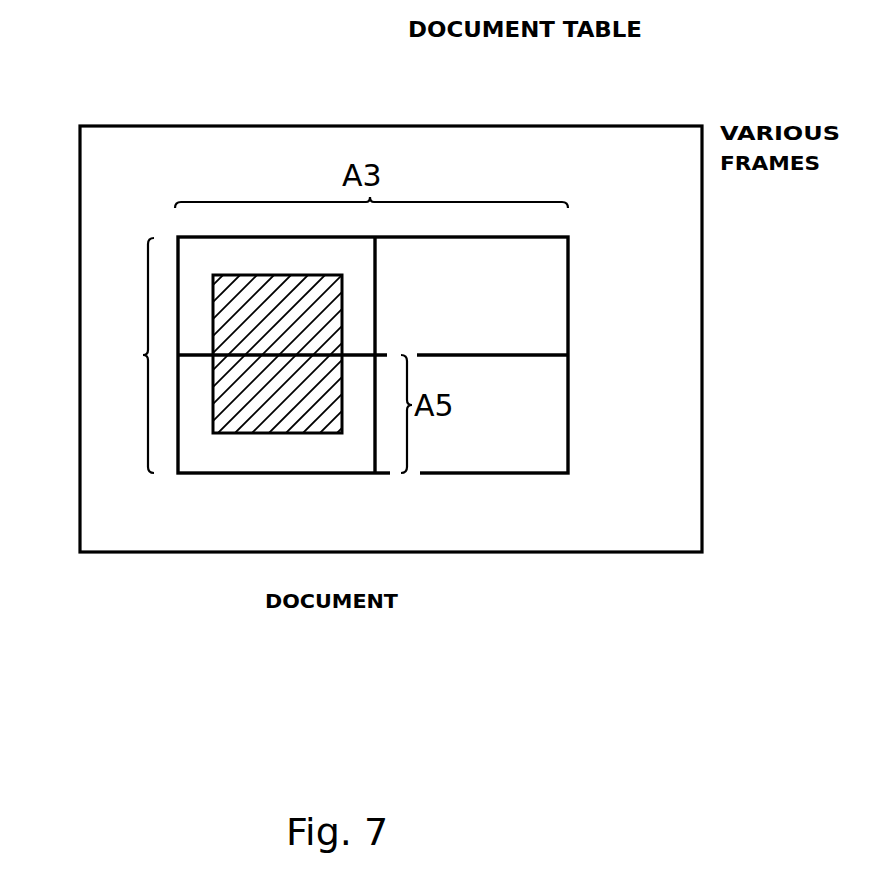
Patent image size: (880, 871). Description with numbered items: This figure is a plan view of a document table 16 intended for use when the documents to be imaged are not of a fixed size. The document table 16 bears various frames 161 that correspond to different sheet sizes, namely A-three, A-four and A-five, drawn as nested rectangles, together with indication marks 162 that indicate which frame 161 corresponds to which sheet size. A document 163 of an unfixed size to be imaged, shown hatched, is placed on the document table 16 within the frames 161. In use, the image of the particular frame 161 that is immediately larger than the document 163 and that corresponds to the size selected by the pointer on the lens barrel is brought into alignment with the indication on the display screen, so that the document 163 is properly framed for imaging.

The document table 16 is at (473, 126).
The various frames 161 is at (572, 270).
The indication marks 162 is at (114, 370).
The document 163 is at (245, 435).